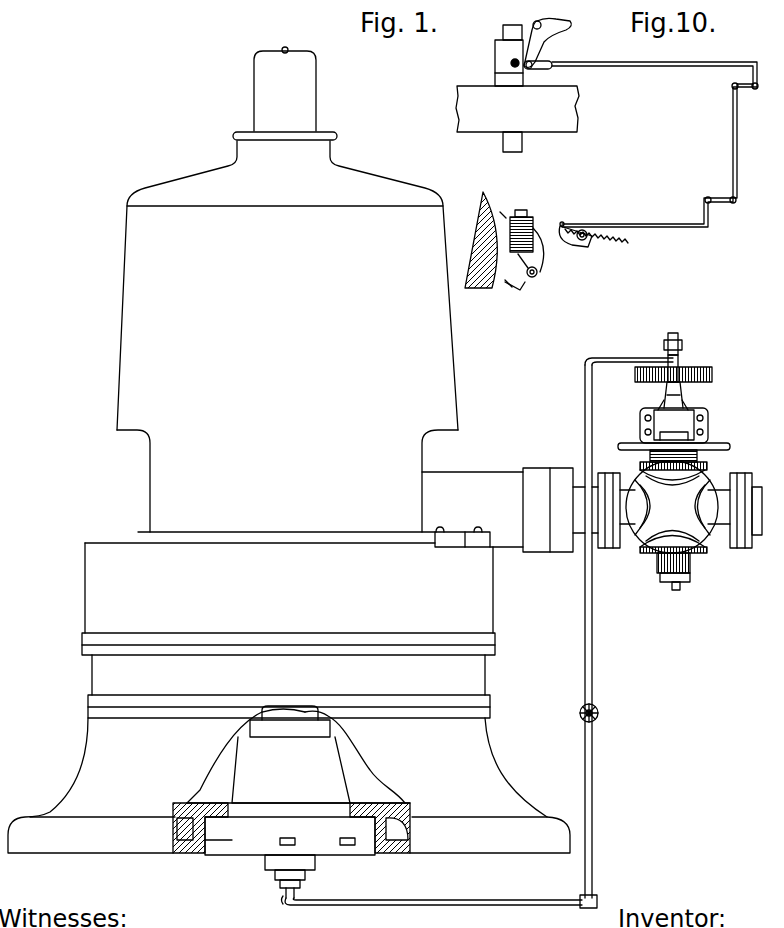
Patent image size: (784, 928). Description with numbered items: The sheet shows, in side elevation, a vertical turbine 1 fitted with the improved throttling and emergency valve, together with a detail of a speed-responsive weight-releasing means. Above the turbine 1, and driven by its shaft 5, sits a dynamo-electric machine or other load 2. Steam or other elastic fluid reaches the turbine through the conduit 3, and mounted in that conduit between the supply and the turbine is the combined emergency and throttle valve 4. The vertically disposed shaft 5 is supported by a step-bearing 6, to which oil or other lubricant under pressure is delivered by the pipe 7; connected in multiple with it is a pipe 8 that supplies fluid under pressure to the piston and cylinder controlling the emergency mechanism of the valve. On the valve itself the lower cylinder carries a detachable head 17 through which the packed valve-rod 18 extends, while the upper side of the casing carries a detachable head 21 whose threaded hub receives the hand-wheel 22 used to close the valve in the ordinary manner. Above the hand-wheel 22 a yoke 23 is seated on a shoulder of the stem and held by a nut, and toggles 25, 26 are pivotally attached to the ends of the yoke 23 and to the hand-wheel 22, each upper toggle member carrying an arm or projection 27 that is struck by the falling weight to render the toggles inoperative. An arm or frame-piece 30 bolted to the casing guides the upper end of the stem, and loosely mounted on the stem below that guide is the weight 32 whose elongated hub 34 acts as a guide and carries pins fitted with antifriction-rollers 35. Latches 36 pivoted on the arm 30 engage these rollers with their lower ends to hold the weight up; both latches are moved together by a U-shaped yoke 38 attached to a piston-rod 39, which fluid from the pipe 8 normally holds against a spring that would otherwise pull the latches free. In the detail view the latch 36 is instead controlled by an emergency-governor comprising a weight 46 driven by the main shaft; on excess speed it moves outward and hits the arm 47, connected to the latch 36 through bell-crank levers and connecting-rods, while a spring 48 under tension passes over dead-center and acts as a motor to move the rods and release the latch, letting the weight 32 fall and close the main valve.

In FIG. 1, the turbine 1 is at (296, 660).
In FIG. 1, the dynamo-electric machine or other load 2 is at (287, 289).
In FIG. 1, the conduit 3 is at (756, 540).
In FIG. 1, the combined emergency and throttle valve 4 is at (672, 507).
In FIG. 1, the shaft 5 is at (302, 708).
In FIG. 1, the step-bearing 6 is at (291, 803).
In FIG. 1, the pipe 7 is at (413, 905).
In FIG. 1, the pipe 8 is at (592, 775).
In FIG. 1, the detachable head 17 is at (655, 555).
In FIG. 1, the valve-rod 18 is at (680, 586).
In FIG. 1, the detachable head 21 is at (650, 456).
In FIG. 1, the hand-wheel 22 is at (725, 444).
In FIG. 1, the yoke 23 is at (690, 410).
In FIG. 1, the toggle 25 is at (640, 430).
In FIG. 1, the toggle 26 is at (708, 426).
In FIG. 1, the arm or projection 27 is at (662, 405).
In FIG. 1, the arm or frame-piece 30 is at (682, 392).
In FIG. 1, the weight 32 is at (700, 367).
In FIG. 10, the weight 32 is at (481, 124).
In FIG. 10, the elongated hub 34 is at (495, 47).
In FIG. 10, the antifriction-roller 35 is at (510, 63).
In FIG. 10, the latch 36 is at (570, 22).
In FIG. 10, the U-shaped yoke 38 is at (552, 68).
In FIG. 10, the piston-rod 39 is at (627, 62).
In FIG. 10, the weight 46 is at (537, 262).
In FIG. 10, the arm 47 is at (588, 246).
In FIG. 10, the spring 48 is at (612, 242).